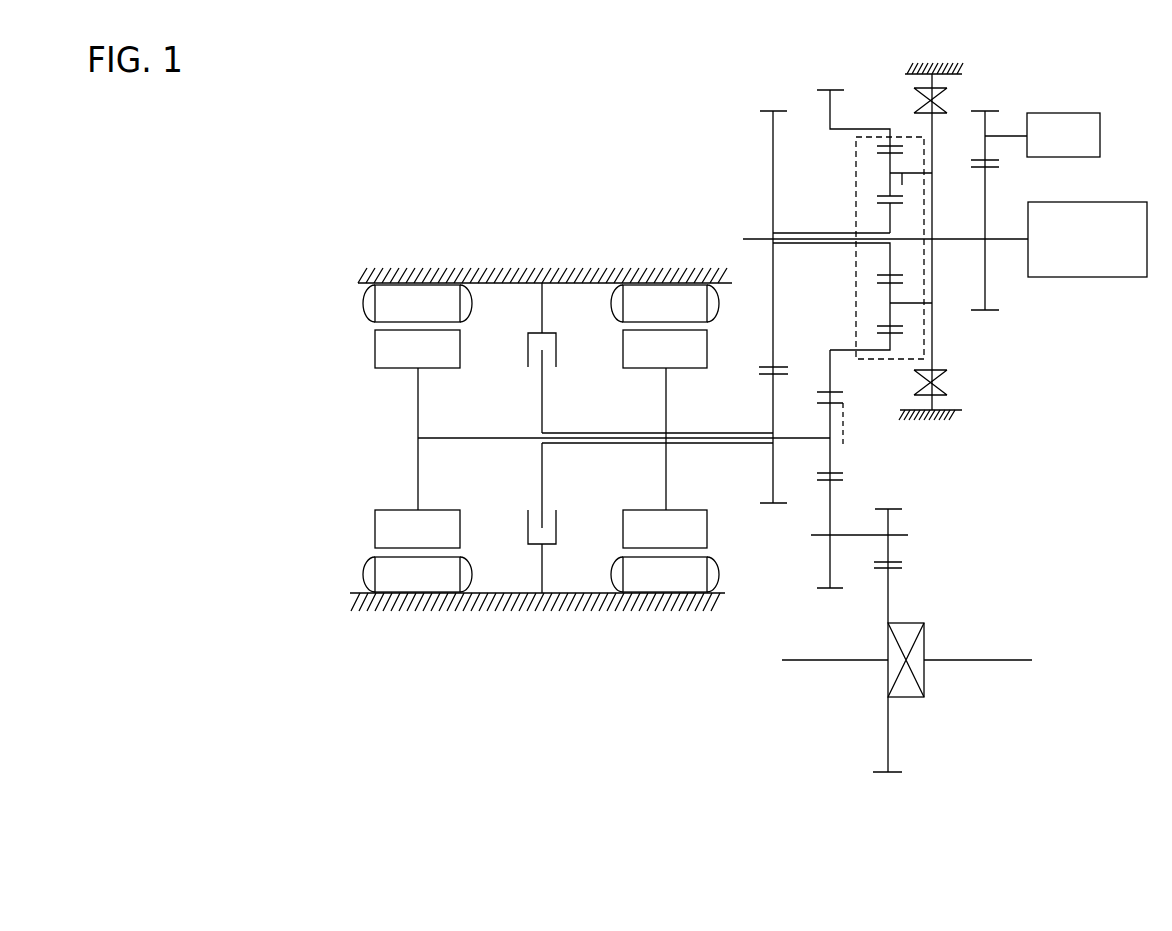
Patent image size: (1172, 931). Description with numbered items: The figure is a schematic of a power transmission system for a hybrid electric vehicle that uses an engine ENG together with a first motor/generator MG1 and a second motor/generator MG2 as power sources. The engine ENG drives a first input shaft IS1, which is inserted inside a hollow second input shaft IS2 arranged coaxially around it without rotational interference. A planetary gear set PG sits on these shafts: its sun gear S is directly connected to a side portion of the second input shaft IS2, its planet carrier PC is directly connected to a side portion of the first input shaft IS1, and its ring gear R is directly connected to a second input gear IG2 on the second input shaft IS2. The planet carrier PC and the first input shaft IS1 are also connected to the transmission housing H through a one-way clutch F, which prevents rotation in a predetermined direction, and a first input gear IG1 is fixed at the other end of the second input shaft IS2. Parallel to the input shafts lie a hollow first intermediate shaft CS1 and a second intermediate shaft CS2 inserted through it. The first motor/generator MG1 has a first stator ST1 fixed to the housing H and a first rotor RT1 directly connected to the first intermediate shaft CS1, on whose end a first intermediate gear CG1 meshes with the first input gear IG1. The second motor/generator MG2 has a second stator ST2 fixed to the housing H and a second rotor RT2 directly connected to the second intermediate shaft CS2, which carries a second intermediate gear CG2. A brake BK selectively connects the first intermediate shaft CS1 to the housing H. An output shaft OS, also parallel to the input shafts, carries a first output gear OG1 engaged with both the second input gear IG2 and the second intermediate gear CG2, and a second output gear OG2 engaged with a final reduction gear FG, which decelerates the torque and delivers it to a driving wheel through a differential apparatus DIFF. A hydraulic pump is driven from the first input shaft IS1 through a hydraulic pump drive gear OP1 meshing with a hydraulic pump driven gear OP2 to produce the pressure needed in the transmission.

The transmission housing H is at (570, 281).
The second motor/generator MG2 is at (356, 326).
The second stator ST2 is at (417, 438).
The second rotor RT2 is at (417, 439).
The first motor/generator MG1 is at (611, 341).
The first stator ST1 is at (665, 438).
The first rotor RT1 is at (665, 439).
The brake BK is at (523, 357).
The second intermediate shaft CS2 is at (468, 440).
The first intermediate shaft CS1 is at (617, 445).
The first input gear IG1 is at (772, 130).
The second input gear IG2 is at (830, 108).
The ring gear R is at (877, 143).
The planet carrier PC is at (890, 183).
The sun gear S is at (877, 205).
The planetary gear set PG is at (875, 368).
The second input shaft IS2 is at (805, 247).
The first input shaft IS1 is at (953, 246).
The one-way clutch F is at (945, 128).
The hydraulic pump drive gear OP1 is at (986, 189).
The hydraulic pump driven gear OP2 is at (987, 123).
The engine ENG is at (1087, 239).
The first intermediate gear CG1 is at (773, 406).
The second intermediate gear CG2 is at (831, 462).
The first output gear OG1 is at (831, 490).
The second output gear OG2 is at (890, 522).
The output shaft OS is at (820, 536).
The final reduction gear FG is at (890, 597).
The differential apparatus DIFF is at (927, 641).